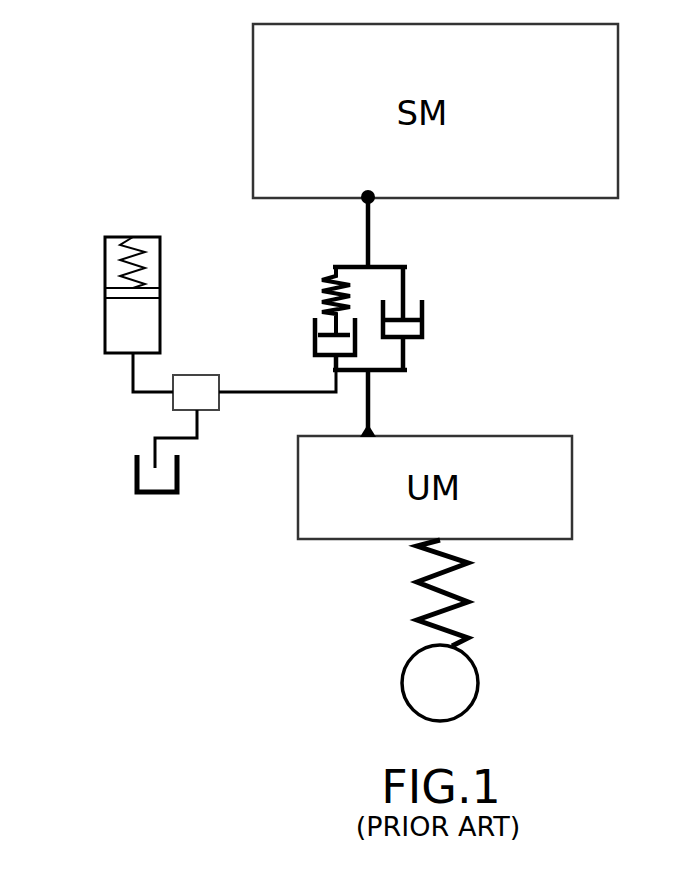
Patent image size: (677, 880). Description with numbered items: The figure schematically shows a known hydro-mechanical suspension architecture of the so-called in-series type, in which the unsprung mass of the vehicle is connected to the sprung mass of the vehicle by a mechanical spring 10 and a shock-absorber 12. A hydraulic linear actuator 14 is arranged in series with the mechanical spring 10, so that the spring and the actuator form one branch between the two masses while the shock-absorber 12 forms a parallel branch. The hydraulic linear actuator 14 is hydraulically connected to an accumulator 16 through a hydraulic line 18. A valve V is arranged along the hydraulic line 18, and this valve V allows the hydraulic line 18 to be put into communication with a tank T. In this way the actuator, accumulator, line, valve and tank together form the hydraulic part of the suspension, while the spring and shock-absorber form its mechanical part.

The mechanical spring 10 is at (322, 281).
The shock-absorber 12 is at (425, 313).
The hydraulic linear actuator 14 is at (316, 341).
The accumulator 16 is at (104, 273).
The hydraulic line 18 is at (252, 395).
The valve V is at (195, 374).
The tank T is at (155, 493).